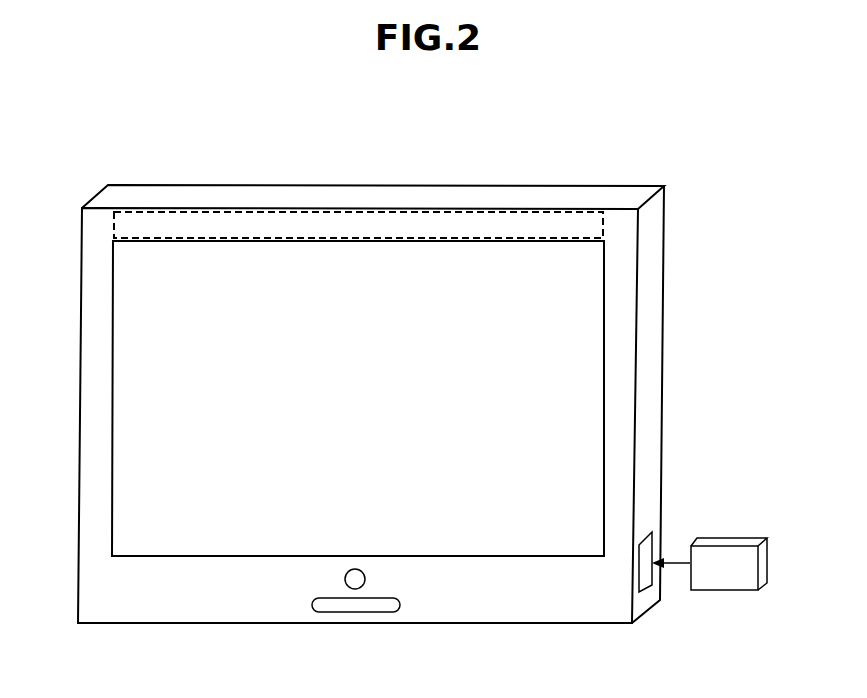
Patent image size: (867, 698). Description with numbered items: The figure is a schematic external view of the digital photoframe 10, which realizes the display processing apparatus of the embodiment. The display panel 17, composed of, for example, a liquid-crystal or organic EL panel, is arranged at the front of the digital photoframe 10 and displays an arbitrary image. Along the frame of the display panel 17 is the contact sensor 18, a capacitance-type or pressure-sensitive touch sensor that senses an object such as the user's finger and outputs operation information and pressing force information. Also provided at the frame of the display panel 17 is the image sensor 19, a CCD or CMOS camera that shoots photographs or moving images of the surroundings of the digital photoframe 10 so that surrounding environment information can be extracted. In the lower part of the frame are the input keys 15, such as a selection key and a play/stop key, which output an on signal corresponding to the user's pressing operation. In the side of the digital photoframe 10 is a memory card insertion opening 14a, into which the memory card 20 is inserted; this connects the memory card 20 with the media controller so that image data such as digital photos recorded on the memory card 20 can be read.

The digital photoframe 10 is at (308, 128).
The display panel 17 is at (562, 357).
The contact sensor 18 is at (497, 212).
The image sensor 19 is at (345, 572).
The input keys 15 is at (352, 606).
The memory card insertion opening 14a is at (647, 537).
The memory card 20 is at (737, 540).